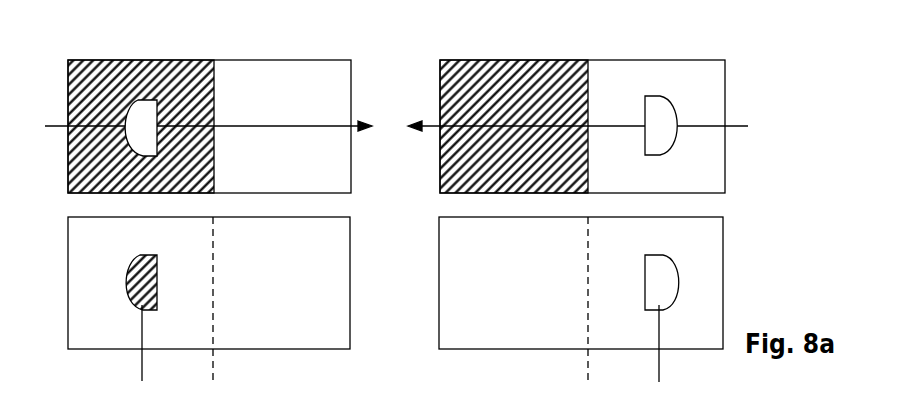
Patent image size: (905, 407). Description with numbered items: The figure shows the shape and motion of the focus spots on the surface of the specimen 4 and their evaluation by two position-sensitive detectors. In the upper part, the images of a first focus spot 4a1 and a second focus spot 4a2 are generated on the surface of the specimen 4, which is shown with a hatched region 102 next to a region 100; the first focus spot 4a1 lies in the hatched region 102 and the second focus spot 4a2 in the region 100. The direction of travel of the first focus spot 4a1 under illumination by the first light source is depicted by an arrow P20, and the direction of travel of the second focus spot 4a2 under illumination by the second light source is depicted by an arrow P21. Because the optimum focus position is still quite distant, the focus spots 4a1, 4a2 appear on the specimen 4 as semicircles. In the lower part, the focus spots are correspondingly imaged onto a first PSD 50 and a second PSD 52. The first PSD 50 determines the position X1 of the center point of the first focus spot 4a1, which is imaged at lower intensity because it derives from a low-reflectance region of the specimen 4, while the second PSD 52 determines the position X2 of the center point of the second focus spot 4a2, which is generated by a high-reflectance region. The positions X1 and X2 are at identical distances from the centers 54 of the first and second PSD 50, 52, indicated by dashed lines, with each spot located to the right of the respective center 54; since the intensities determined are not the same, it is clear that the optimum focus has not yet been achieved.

The specimen 4 is at (68, 71).
The first focus spot 4a1 is at (133, 115).
The second focus spot 4a2 is at (648, 115).
The body 100 is at (293, 66).
The hatched portion of body 102 is at (68, 192).
The arrow indicating direction of travel of first focus spot P20 is at (258, 101).
The arrow indicating direction of travel of second focus spot P21 is at (414, 124).
The first PSD 50 is at (350, 316).
The second PSD 52 is at (723, 255).
The center of PSD 54 is at (213, 364).
The position of center point of first focus spot X1 is at (142, 367).
The position of center point of second focus spot X2 is at (661, 357).